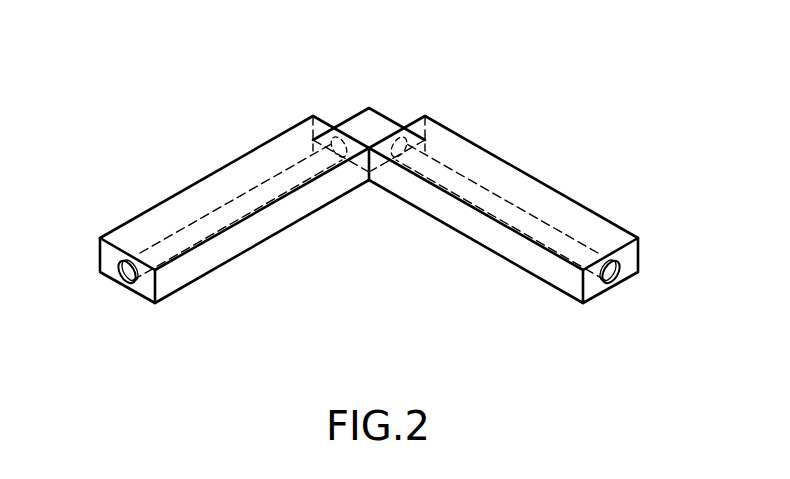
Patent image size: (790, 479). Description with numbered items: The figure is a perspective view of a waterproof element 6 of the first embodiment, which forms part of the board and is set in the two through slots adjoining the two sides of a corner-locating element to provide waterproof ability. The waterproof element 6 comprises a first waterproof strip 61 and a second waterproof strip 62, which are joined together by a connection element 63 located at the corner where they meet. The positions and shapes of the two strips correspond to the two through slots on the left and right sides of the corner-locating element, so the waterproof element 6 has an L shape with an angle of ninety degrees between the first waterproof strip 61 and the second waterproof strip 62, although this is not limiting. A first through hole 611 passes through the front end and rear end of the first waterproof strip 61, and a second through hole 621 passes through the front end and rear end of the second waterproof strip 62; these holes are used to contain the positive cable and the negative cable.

The waterproof element 6 is at (583, 61).
The first waterproof strip 61 is at (235, 182).
The first through hole 611 is at (122, 273).
The second waterproof strip 62 is at (525, 193).
The second through hole 621 is at (614, 275).
The connection element 63 is at (373, 125).